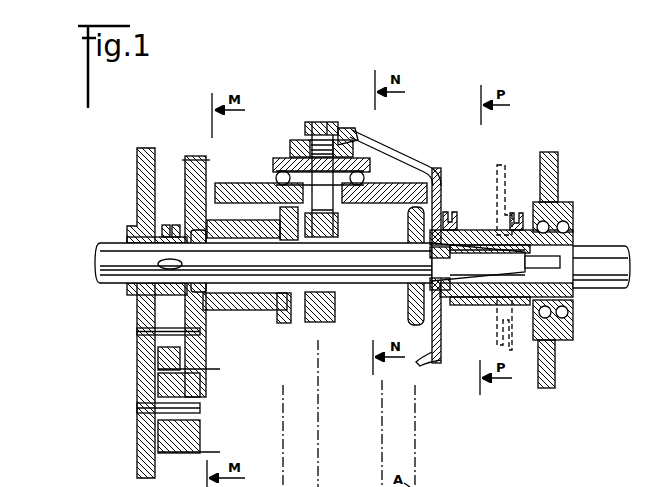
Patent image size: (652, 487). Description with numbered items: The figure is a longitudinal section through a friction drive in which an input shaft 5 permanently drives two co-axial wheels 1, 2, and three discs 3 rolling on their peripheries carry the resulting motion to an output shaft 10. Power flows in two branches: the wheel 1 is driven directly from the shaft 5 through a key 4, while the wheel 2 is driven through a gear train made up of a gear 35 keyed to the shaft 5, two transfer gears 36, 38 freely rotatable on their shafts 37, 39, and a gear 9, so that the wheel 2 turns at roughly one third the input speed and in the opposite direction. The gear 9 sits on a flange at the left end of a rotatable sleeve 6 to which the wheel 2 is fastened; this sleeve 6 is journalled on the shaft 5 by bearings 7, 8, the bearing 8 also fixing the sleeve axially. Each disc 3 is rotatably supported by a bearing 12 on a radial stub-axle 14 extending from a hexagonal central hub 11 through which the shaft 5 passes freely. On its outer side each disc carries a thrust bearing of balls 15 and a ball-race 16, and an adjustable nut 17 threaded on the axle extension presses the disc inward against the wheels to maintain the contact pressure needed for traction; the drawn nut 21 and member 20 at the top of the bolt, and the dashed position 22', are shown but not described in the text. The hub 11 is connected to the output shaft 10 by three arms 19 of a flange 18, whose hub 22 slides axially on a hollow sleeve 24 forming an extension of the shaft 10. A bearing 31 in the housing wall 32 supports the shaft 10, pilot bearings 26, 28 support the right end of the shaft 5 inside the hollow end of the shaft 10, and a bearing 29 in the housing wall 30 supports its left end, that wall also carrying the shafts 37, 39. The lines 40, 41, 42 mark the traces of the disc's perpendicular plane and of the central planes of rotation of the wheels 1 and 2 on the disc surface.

The wheel 1 is at (411, 305).
The wheel 2 is at (281, 312).
The disc 3 is at (240, 188).
The key 4 is at (410, 270).
The input shaft 5 is at (114, 243).
The rotatable sleeve 6 is at (254, 310).
The bearing 7 is at (272, 228).
The bearing 8 is at (205, 229).
The gear 9 is at (205, 360).
The output shaft 10 is at (590, 249).
The central hub 11 is at (338, 236).
The bearing 12 is at (360, 203).
The radial stub-axle 14 is at (330, 222).
The balls 15 is at (365, 179).
The ball-race 16 is at (352, 163).
The adjustable nut 17 is at (290, 148).
The flange 18 is at (440, 174).
The arms 19 is at (371, 137).
The pivot 20 is at (348, 130).
The lock nut 21 is at (321, 122).
The hub 22 is at (483, 210).
The clip (alternate position) 22' is at (514, 200).
The hollow sleeve 24 is at (480, 300).
The pilot bearing 26 is at (464, 237).
The pilot bearing 28 is at (512, 318).
The bearing 29 is at (137, 292).
The housing wall 30 is at (143, 387).
The bearing 31 is at (570, 226).
The housing wall 32 is at (553, 170).
The gear 35 is at (175, 225).
The transfer gear 36 is at (158, 358).
The shaft 37 is at (145, 333).
The transfer gear 38 is at (205, 433).
The shaft 39 is at (203, 408).
The line 40 is at (320, 385).
The line 41 is at (418, 414).
The line 42 is at (283, 405).